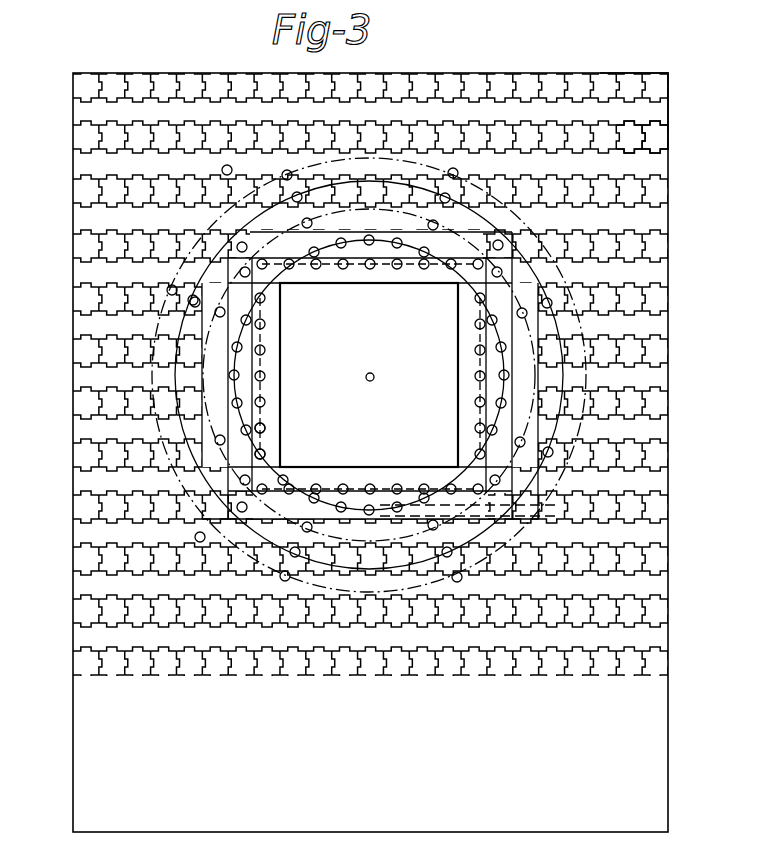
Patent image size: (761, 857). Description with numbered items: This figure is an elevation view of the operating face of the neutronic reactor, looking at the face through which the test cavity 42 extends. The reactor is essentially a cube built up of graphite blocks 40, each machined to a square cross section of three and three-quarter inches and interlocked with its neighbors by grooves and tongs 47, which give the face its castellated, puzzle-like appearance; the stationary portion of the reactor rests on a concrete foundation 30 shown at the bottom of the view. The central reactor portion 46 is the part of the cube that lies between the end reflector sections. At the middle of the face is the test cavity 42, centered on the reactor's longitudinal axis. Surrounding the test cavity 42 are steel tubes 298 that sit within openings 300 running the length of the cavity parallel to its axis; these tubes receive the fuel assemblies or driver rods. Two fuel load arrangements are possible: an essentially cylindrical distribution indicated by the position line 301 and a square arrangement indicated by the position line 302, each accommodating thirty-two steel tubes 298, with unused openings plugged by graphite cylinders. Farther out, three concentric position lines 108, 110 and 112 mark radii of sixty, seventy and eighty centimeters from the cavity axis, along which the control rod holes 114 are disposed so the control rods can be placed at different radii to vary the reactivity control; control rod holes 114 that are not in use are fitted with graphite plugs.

The concrete foundation 30 is at (100, 746).
The graphite blocks 40 is at (78, 433).
The test cavity 42 is at (380, 343).
The central reactor portion 46 is at (675, 79).
The grooves and tongs 47 is at (658, 150).
The position line 108 is at (538, 338).
The position line 110 is at (514, 256).
The position line 112 is at (497, 192).
The control rod holes 114 is at (190, 303).
The steel tubes 298 is at (498, 374).
The openings 300 is at (304, 487).
The position line 301 is at (266, 450).
The position line 302 is at (266, 400).